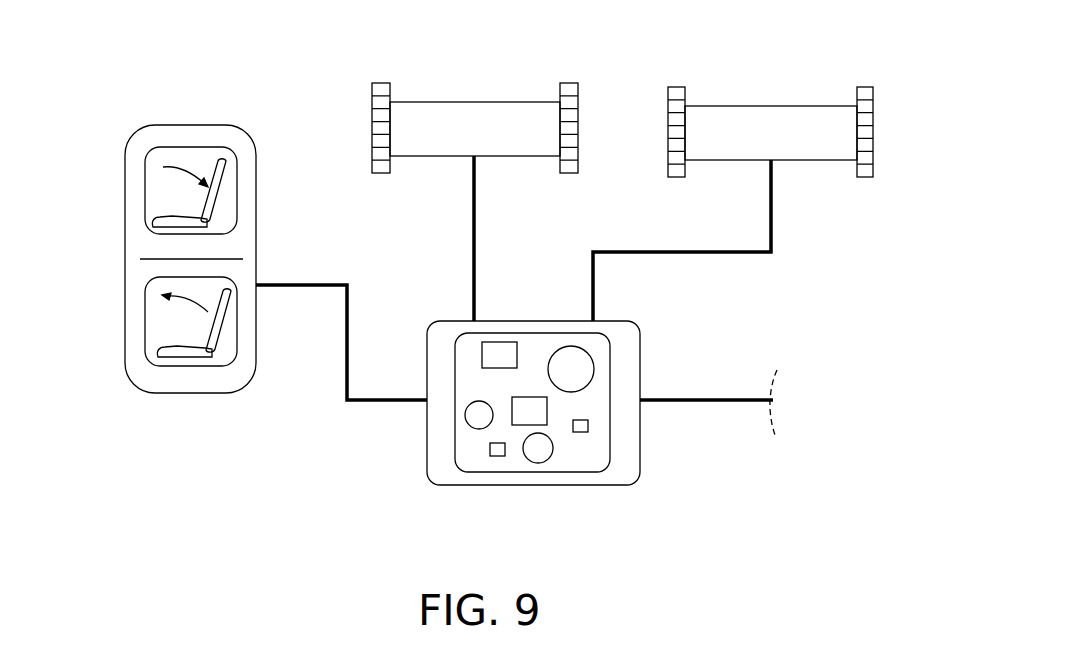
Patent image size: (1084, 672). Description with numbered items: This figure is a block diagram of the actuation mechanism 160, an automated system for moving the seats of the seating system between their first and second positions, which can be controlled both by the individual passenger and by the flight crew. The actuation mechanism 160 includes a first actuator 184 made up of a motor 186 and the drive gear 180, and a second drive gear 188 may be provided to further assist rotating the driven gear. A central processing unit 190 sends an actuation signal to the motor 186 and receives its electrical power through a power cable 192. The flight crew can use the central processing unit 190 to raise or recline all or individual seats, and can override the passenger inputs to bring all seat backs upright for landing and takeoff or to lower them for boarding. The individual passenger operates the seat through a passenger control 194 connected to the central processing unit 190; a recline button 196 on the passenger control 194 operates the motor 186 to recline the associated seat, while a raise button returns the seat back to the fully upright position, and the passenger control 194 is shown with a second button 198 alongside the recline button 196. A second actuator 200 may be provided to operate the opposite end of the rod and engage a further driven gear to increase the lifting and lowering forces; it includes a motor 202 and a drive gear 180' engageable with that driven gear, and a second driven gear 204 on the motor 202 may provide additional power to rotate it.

The actuation mechanism 160 is at (279, 52).
The drive gear 180 is at (891, 118).
The drive gear 180' is at (599, 100).
The first actuator 184 is at (774, 103).
The motor 186 is at (813, 106).
The second drive gear 188 is at (676, 92).
The central processing unit 190 is at (641, 348).
The power cable 192 is at (722, 400).
The passenger control 194 is at (125, 268).
The recline button 196 is at (160, 187).
The second seat switch 198 is at (160, 318).
The second actuator 200 is at (468, 100).
The motor 202 is at (508, 102).
The second driven gear 204 is at (372, 126).